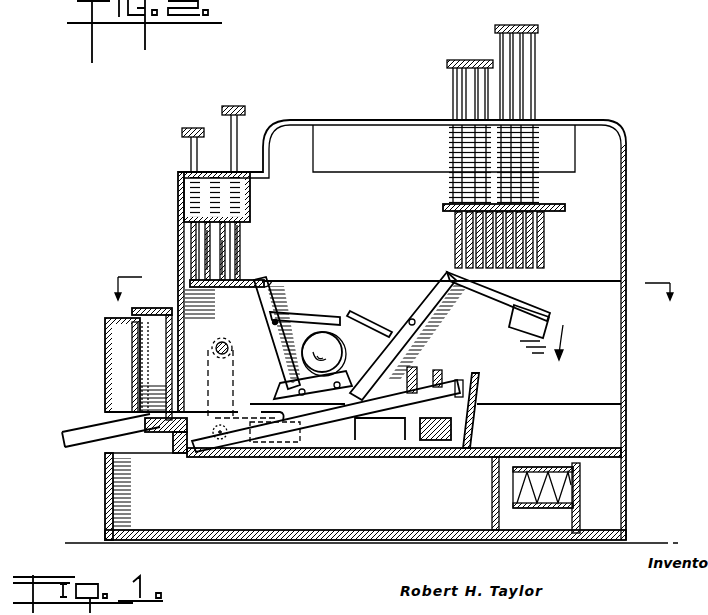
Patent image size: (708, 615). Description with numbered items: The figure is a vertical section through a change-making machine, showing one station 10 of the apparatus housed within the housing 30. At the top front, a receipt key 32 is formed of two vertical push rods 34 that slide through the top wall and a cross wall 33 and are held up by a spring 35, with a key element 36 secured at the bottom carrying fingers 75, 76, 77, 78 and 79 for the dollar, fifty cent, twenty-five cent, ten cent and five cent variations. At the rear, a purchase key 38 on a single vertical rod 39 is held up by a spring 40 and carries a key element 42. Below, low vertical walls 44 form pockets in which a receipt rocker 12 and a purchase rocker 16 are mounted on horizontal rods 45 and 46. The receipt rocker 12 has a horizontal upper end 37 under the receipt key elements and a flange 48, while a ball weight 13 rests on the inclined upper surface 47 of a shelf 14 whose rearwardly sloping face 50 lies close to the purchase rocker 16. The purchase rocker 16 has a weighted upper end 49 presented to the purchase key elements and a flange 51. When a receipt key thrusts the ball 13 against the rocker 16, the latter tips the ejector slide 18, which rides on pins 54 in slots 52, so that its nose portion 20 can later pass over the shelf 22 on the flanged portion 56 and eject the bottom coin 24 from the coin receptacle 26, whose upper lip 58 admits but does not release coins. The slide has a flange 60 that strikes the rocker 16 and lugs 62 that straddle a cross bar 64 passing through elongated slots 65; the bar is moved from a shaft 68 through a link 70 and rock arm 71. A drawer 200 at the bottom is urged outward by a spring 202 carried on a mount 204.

The coin receptacle station 10 is at (391, 291).
The receipt rocker 12 is at (262, 297).
The ball weight 13 is at (334, 345).
The shelf 14 is at (313, 385).
The purchase rocker 16 is at (407, 364).
The ejector slide 18 is at (466, 392).
The nose portion 20 is at (197, 452).
The shelf 22 is at (188, 412).
The coin 24 is at (103, 422).
The coin receptacle 26 is at (132, 357).
The housing 30 is at (402, 120).
The receipt key 32 is at (222, 108).
The cross wall 33 is at (247, 224).
The push rod 34 is at (190, 152).
The spring 35 is at (246, 197).
The key element 36 is at (241, 249).
The upper end of receipt rocker 37 is at (252, 280).
The purchase key 38 is at (475, 60).
The vertical rod 39 is at (523, 70).
The spring 40 is at (540, 153).
The key element 42 is at (545, 226).
The vertical wall 44 is at (601, 380).
The horizontal rod 45 is at (271, 329).
The horizontal rod 46 is at (417, 322).
The upper surface of shelf 47 is at (286, 386).
The flange 48 is at (337, 315).
The upper end of purchase rocker 49 is at (506, 301).
The rearwardly sloping face 50 is at (343, 378).
The flange 51 is at (355, 313).
The slot 52 is at (275, 420).
The pin 54 is at (350, 427).
The flanged portion 56 is at (157, 433).
The upper lip 58 is at (166, 309).
The flange 60 is at (407, 383).
The lug 62 is at (402, 425).
The cross bar 64 is at (428, 441).
The elongated slot 65 is at (366, 443).
The shaft 68 is at (230, 351).
The link 70 is at (282, 440).
The rock arm 71 is at (236, 396).
The depending fingers 75 is at (195, 233).
The key fingers 76 is at (208, 250).
The key fingers 77 is at (246, 232).
The key fingers 78 is at (225, 255).
The key fingers 79 is at (246, 238).
The drawer 200 is at (212, 503).
The spring 202 is at (505, 472).
The mount 204 is at (580, 511).